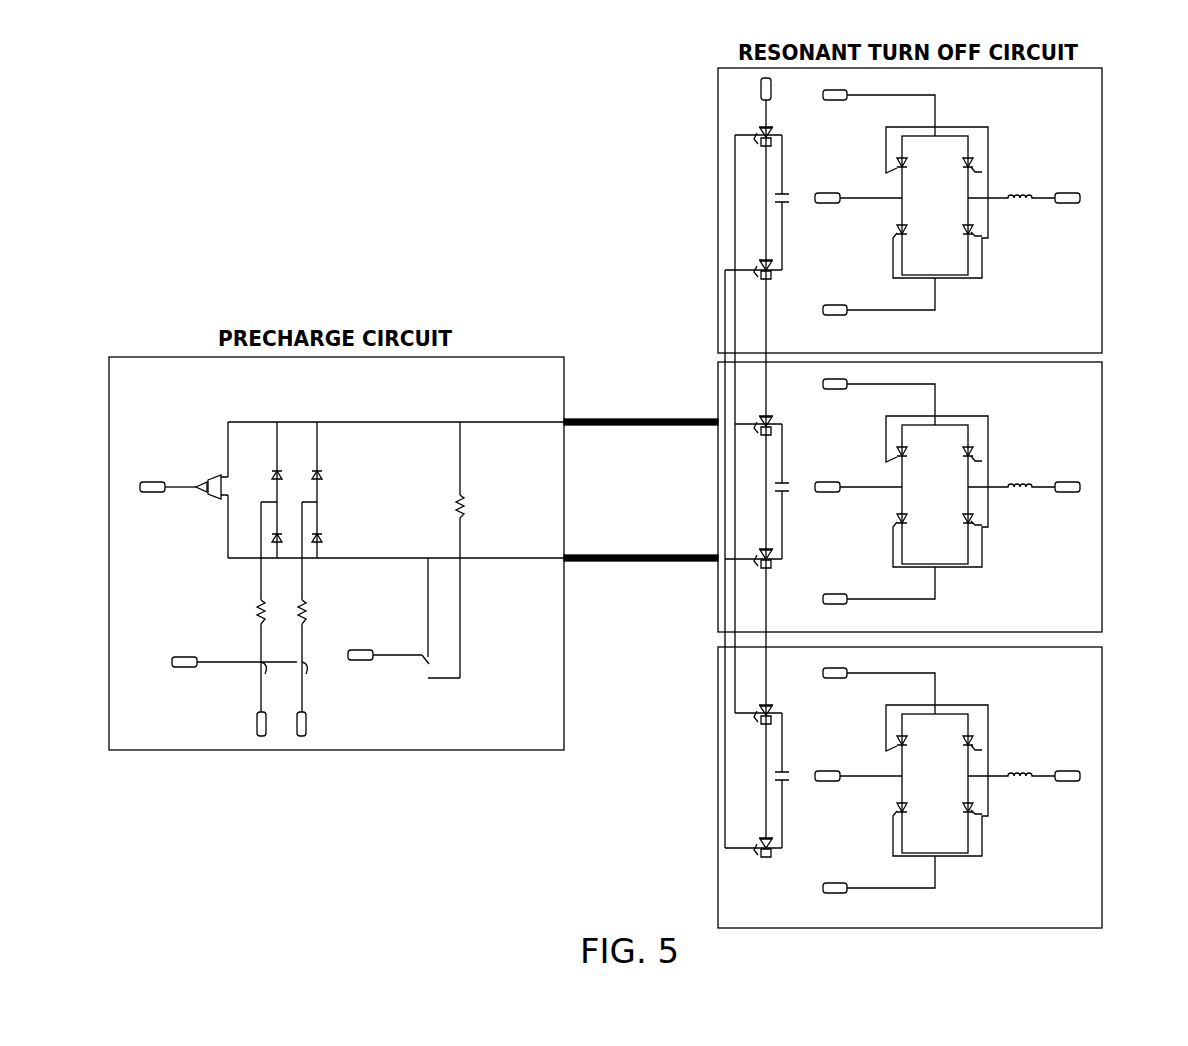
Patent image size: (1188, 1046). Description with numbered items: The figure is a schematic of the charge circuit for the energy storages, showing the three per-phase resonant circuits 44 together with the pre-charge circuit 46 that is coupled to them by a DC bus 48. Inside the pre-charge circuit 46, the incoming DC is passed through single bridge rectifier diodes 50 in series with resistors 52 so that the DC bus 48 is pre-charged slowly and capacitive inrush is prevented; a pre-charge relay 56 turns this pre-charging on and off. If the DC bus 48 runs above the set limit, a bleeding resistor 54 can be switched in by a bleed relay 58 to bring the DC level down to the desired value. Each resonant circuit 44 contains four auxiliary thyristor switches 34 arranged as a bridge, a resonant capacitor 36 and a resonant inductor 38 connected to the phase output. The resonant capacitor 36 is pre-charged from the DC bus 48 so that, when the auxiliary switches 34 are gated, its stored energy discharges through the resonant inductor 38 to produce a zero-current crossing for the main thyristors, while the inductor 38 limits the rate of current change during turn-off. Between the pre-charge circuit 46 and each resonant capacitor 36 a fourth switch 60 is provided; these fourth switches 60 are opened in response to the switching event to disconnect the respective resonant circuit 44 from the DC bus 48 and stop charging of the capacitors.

The auxiliary thyristor switch 34 is at (893, 164).
The resonant capacitor 36 is at (786, 206).
The resonant inductor 38 is at (1020, 203).
The resonant circuit 44 is at (1103, 117).
The pre-charge circuit 46 is at (152, 355).
The DC bus 48 is at (603, 419).
The bridge rectifier diode 50 is at (272, 476).
The resistor 52 is at (258, 603).
The bleeding resistor 54 is at (467, 505).
The pre-charge relay 56 is at (266, 674).
The bleed relay 58 is at (431, 656).
The fourth switch 60 is at (762, 125).